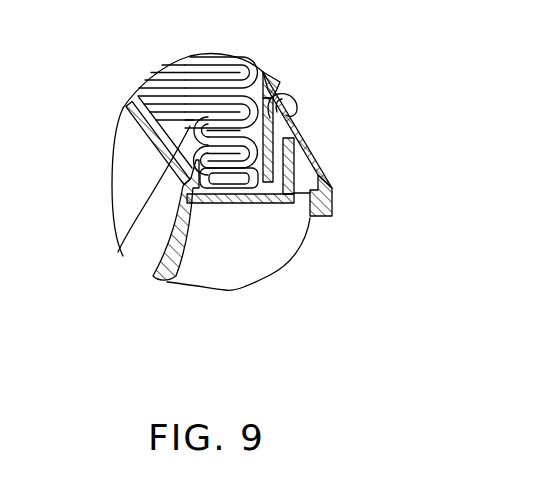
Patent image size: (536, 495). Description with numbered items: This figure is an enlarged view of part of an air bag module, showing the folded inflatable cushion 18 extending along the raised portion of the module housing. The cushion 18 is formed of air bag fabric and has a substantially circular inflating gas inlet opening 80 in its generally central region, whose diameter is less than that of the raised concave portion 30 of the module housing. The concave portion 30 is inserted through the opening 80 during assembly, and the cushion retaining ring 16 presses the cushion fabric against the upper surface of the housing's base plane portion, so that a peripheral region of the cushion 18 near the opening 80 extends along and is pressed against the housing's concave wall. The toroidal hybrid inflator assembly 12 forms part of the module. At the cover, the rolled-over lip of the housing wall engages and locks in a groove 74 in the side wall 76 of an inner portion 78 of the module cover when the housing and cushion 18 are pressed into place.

The toroidal hybrid inflator assembly 12 is at (150, 144).
The cushion retaining ring 16 is at (218, 190).
The folded inflatable cushion 18 is at (197, 174).
The raised concave portion 30 is at (141, 110).
The groove 74 is at (272, 93).
The side wall 76 is at (272, 178).
The inner portion 78 is at (284, 168).
The inflating gas inlet opening 80 is at (180, 128).